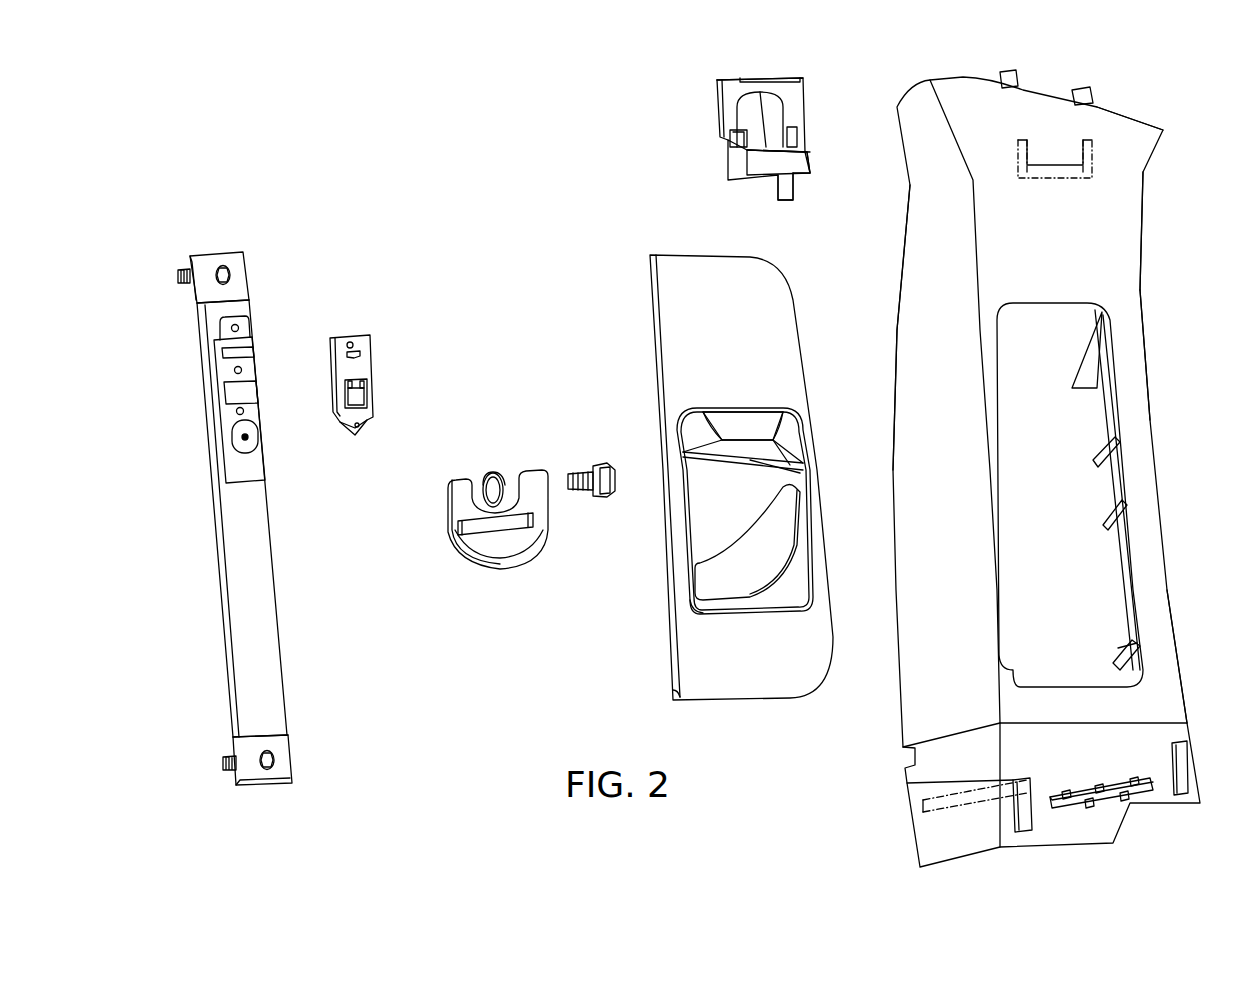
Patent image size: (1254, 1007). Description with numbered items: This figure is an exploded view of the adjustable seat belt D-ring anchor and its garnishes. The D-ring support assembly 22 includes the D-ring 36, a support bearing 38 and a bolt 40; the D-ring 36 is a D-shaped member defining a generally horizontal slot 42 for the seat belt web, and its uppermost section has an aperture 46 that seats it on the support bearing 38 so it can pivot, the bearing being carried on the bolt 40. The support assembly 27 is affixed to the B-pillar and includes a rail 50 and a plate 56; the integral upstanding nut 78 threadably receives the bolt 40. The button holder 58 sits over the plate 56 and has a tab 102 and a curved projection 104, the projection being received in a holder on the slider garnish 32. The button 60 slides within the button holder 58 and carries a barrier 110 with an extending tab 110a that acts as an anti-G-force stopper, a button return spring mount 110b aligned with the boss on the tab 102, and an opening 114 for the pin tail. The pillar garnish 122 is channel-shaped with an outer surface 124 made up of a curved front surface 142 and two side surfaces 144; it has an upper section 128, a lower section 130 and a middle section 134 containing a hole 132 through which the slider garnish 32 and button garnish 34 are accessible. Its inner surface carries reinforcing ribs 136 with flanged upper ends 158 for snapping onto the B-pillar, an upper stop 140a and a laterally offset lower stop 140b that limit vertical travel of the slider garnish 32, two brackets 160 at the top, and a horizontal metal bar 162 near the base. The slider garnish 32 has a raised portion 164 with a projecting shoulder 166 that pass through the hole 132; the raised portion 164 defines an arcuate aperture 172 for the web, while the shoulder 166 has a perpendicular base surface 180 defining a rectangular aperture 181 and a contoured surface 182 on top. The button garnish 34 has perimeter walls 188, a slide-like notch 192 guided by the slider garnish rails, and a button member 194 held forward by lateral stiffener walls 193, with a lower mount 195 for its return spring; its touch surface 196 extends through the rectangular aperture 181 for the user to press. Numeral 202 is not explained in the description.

The D-ring support assembly 22 is at (454, 584).
The support assembly 27 is at (298, 322).
The slider garnish 32 is at (645, 310).
The button garnish 34 is at (822, 130).
The D-ring 36 is at (505, 566).
The support bearing 38 is at (482, 480).
The bolt 40 is at (604, 497).
The slot 42 is at (468, 532).
The aperture 46 is at (498, 474).
The rail 50 is at (250, 235).
The plate 56 is at (265, 470).
The button holder 58 is at (376, 417).
The button 60 is at (378, 378).
The nut 78 is at (258, 440).
The tab 102 is at (366, 346).
The curved projection 104 is at (352, 338).
The barrier 110 is at (347, 392).
The extending tab 110a is at (370, 395).
The button return spring mount 110b is at (345, 378).
The opening 114 is at (350, 400).
The pillar garnish 122 is at (1146, 194).
The outer surface 124 is at (1100, 240).
The upper section 128 is at (1120, 150).
The lower section 130 is at (1150, 700).
The hole 132 is at (1090, 592).
The middle section 134 is at (1145, 480).
The reinforcing ribs 136 is at (1090, 352).
The upper stop 140a is at (1065, 185).
The lower stop 140b is at (945, 805).
The front surface 142 is at (1080, 280).
The side surfaces 144 is at (912, 345).
The flanged upper ends 158 is at (1092, 472).
The brackets 160 is at (1082, 90).
The horizontal metal bar 162 is at (1125, 776).
The raised portion 164 is at (703, 605).
The projecting shoulder 166 is at (785, 460).
The arcuate aperture 172 is at (783, 540).
The base surface 180 is at (705, 457).
The rectangular aperture 181 is at (790, 465).
The contoured surface 182 is at (740, 440).
The perimeter walls 188 is at (716, 120).
The slide-like notch 192 is at (750, 78).
The lateral stiffener walls 193 is at (797, 130).
The button member 194 is at (800, 165).
The lower mount 195 is at (750, 100).
The touch surface 196 is at (770, 178).
The edge 202 is at (810, 170).